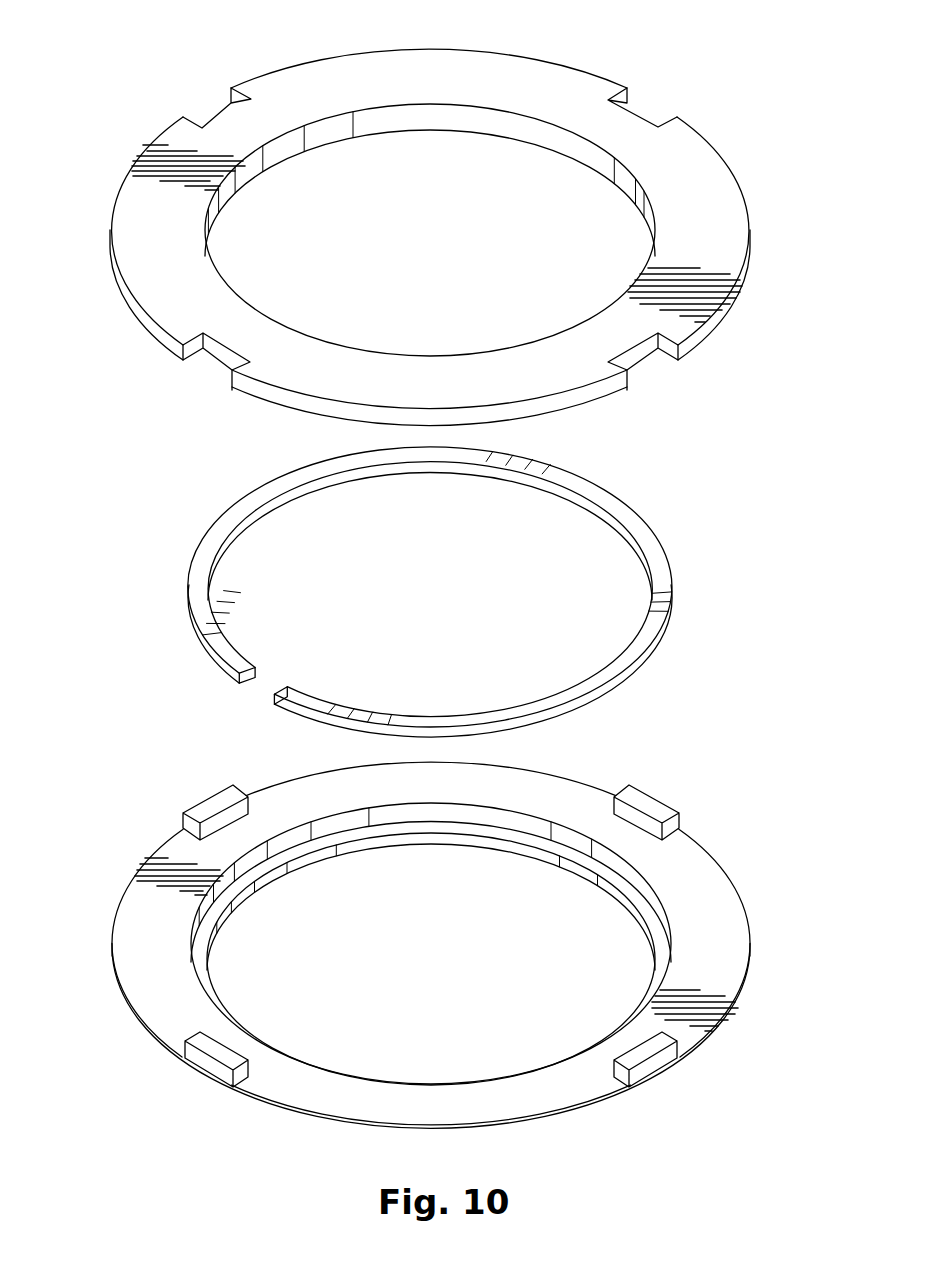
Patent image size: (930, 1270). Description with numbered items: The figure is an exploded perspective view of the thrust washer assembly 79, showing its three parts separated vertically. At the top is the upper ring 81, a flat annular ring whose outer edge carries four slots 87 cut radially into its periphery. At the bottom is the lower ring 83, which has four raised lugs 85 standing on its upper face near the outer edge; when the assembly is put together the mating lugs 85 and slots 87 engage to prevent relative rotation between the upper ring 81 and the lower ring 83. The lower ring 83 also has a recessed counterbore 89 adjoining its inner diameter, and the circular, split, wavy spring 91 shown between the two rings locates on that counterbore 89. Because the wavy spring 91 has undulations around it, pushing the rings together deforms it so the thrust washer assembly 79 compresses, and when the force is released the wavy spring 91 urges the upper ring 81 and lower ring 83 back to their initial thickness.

The thrust washer assembly 79 is at (604, 44).
The upper ring 81 is at (320, 82).
The slot 87 is at (636, 110).
The wavy spring 91 is at (662, 642).
The lower ring 83 is at (148, 966).
The recessed counterbore 89 is at (664, 957).
The lug 85 is at (655, 1050).